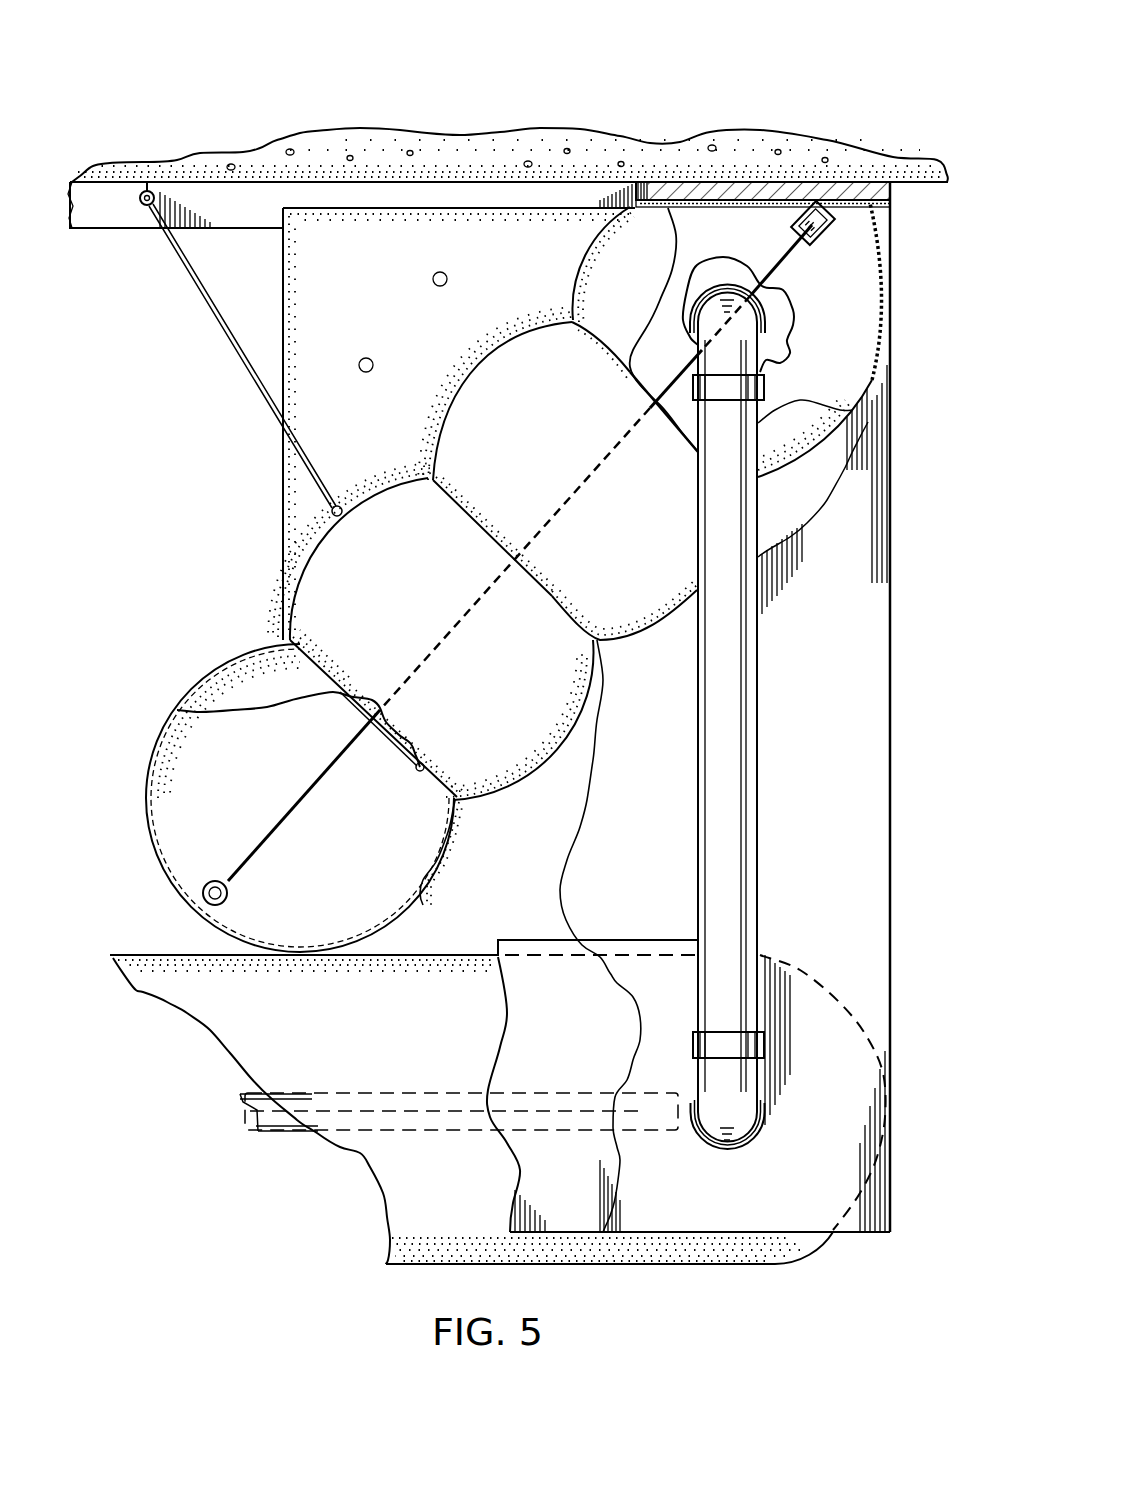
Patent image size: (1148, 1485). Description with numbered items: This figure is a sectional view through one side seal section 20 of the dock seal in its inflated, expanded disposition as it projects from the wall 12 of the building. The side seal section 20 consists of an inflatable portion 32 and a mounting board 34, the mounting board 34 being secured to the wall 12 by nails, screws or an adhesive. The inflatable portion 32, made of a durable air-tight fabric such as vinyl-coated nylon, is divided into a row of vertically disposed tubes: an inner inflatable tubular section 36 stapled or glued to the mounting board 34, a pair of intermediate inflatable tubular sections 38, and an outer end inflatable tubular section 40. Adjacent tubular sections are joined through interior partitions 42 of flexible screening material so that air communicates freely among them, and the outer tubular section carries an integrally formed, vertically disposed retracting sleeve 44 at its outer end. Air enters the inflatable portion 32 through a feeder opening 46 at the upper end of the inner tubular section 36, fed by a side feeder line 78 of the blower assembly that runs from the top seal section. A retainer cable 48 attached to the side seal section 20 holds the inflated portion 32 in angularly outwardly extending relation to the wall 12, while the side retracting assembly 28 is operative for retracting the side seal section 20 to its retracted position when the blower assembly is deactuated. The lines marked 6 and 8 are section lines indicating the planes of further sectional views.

The wall 12 is at (502, 155).
The side seal section 20 is at (294, 586).
The side retracting assembly 28 is at (786, 268).
The inflatable portion 32 is at (546, 762).
The mounting board 34 is at (806, 183).
The inner inflatable tubular section 36 is at (870, 421).
The intermediate inflatable tubular section 38 is at (628, 630).
The outer end inflatable tubular section 40 is at (425, 893).
The interior partition 42 is at (572, 320).
The retracting sleeve 44 is at (206, 886).
The feeder opening 46 is at (798, 323).
The retainer cable 48 is at (232, 338).
The side feeder line 78 is at (758, 677).
The section line 6- 6 is at (673, 175).
The section line 8- 8 is at (202, 1068).